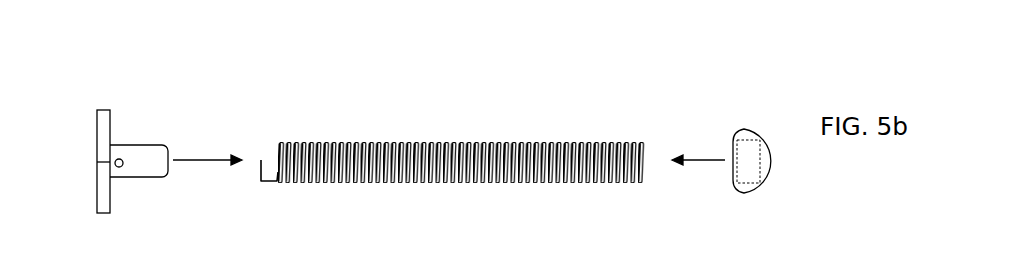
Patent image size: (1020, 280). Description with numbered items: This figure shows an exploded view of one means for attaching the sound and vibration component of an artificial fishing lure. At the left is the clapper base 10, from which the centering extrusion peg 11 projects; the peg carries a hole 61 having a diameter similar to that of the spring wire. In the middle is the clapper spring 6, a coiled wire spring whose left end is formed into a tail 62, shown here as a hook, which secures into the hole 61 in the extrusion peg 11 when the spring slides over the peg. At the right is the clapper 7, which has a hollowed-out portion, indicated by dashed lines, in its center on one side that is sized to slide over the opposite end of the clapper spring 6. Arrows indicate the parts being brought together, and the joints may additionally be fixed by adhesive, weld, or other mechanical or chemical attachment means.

The clapper spring 6 is at (457, 140).
The clapper 7 is at (768, 143).
The clapper base 10 is at (97, 133).
The centering extrusion peg 11 is at (137, 153).
The hole 61 is at (122, 166).
The tail 62 is at (260, 184).